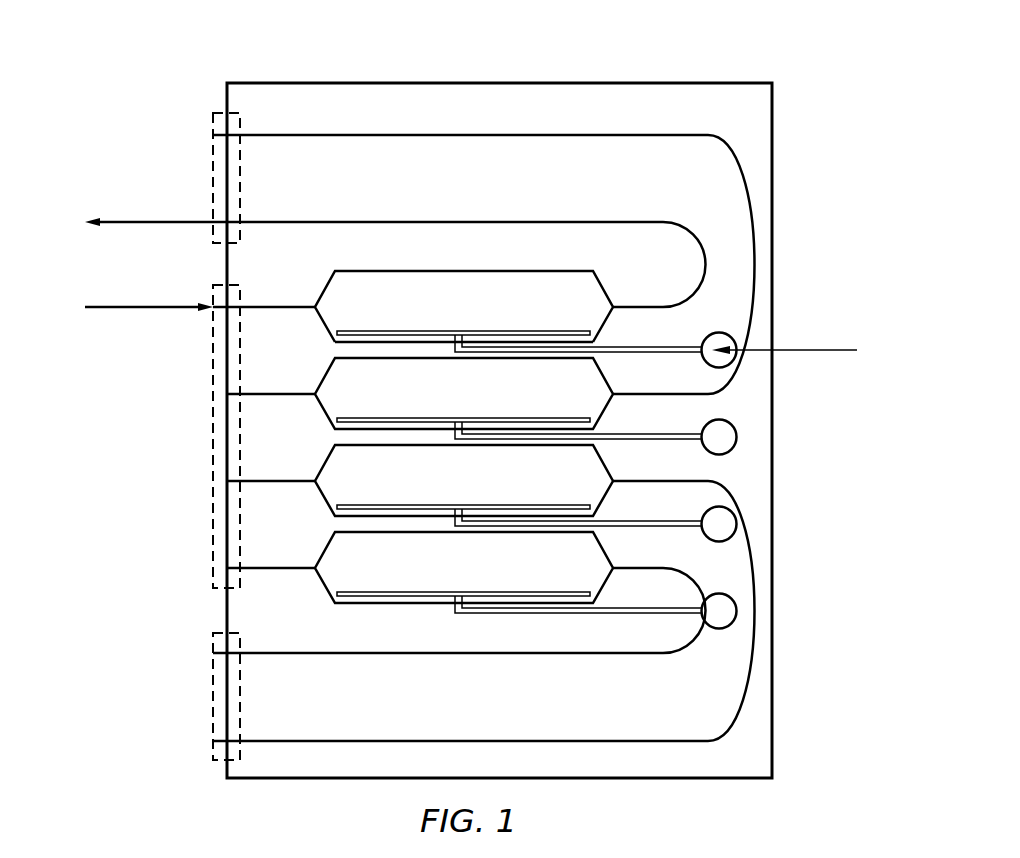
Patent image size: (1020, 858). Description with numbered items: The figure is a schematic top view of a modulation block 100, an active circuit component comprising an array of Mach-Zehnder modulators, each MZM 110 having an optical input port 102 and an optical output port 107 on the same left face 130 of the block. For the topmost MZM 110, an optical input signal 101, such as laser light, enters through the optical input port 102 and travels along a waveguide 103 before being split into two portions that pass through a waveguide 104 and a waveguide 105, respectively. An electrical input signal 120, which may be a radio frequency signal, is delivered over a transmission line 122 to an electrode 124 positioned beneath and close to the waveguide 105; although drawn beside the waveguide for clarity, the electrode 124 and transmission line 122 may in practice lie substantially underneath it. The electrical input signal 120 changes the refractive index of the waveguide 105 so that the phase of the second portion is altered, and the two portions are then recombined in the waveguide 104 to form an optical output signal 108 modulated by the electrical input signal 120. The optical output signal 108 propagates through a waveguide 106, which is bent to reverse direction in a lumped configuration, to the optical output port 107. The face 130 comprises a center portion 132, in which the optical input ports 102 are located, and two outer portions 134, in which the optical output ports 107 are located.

The modulation block 100 is at (183, 58).
The optical input signal 101 is at (152, 305).
The optical input port 102 is at (214, 312).
The waveguide 103 is at (258, 307).
The waveguide 104 is at (470, 271).
The waveguide 105 is at (345, 342).
The waveguide 106 is at (430, 222).
The optical output port 107 is at (213, 135).
The optical output signal 108 is at (147, 223).
The MZM 110 is at (537, 572).
The electrical input signal 120 is at (817, 352).
The transmission line 122 is at (627, 348).
The electrode 124 is at (398, 331).
The face 130 is at (130, 577).
The center portion 132 is at (242, 583).
The outer portion 134 is at (242, 115).